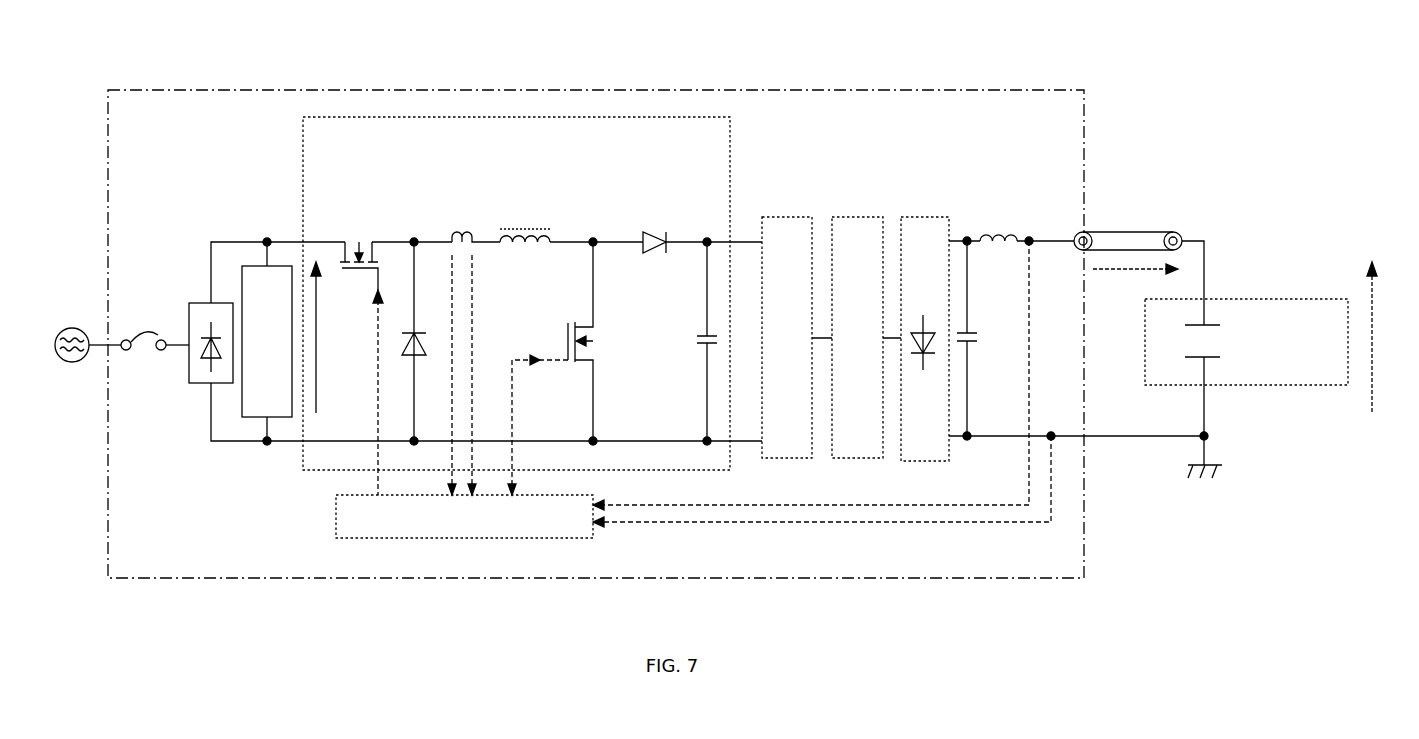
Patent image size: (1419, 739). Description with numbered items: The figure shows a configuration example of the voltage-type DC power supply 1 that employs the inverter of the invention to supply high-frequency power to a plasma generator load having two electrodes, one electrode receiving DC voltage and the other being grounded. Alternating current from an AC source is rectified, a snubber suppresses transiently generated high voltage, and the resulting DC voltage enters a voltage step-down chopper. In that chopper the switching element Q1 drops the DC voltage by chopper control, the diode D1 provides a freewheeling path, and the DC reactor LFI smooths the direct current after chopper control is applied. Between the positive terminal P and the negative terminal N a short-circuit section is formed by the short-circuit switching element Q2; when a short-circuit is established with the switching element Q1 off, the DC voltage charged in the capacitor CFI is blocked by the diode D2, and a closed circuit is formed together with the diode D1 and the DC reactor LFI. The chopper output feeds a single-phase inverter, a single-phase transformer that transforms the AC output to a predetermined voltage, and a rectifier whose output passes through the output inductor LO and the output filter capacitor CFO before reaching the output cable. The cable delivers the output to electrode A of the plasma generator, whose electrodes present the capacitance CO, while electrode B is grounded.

The voltage-type DC power supply 1 is at (508, 92).
The switching element Q1 is at (359, 253).
The diode D1 is at (420, 341).
The short-circuit switching element Q2 is at (550, 368).
The diode D2 is at (677, 261).
The DC reactor LFI is at (525, 253).
The capacitor CFI is at (693, 341).
The output inductor LO is at (998, 222).
The output filter capacitor CFO is at (985, 338).
The plasma generator capacitance CO is at (1246, 342).